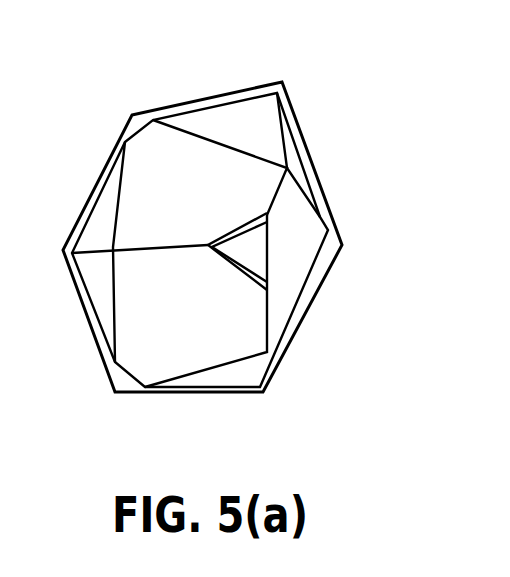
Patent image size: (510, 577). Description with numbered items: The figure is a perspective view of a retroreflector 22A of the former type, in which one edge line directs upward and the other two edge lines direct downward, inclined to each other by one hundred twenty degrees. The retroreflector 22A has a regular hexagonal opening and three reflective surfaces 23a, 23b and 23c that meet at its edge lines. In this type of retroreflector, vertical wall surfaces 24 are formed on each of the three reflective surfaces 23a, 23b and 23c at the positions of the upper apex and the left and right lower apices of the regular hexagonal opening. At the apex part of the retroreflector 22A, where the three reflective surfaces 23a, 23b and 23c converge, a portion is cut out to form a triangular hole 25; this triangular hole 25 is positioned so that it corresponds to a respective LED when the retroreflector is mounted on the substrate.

The retroreflector 22A is at (302, 111).
The reflective surface 23a is at (207, 340).
The reflective surface 23b is at (288, 255).
The reflective surface 23c is at (145, 167).
The vertical wall surface 24 is at (222, 120).
The triangular hole 25 is at (255, 247).